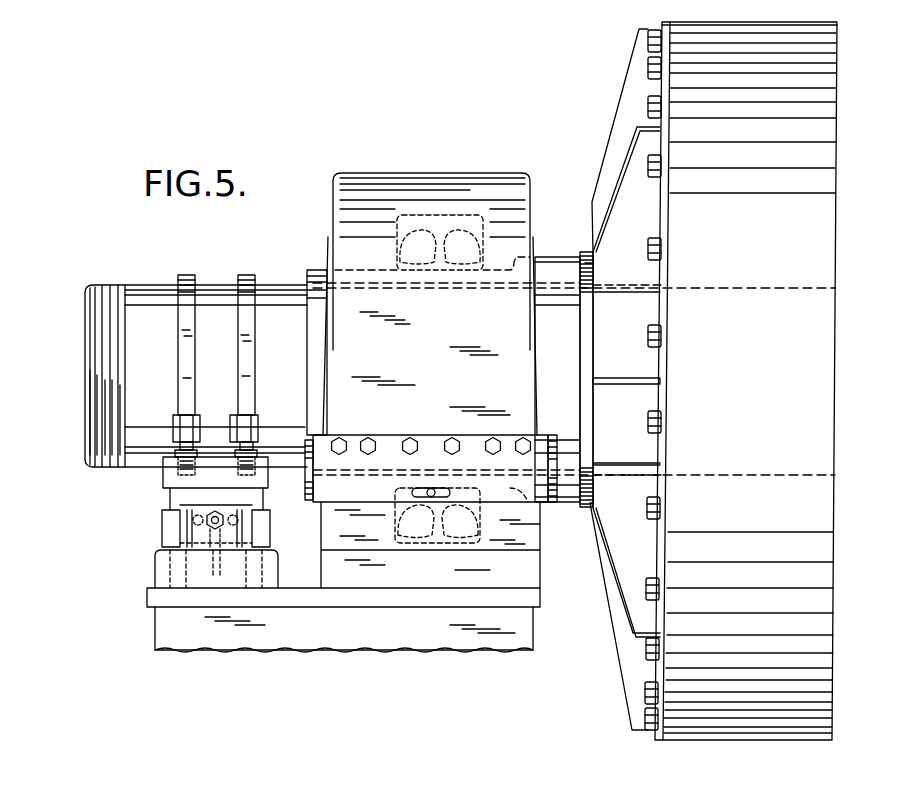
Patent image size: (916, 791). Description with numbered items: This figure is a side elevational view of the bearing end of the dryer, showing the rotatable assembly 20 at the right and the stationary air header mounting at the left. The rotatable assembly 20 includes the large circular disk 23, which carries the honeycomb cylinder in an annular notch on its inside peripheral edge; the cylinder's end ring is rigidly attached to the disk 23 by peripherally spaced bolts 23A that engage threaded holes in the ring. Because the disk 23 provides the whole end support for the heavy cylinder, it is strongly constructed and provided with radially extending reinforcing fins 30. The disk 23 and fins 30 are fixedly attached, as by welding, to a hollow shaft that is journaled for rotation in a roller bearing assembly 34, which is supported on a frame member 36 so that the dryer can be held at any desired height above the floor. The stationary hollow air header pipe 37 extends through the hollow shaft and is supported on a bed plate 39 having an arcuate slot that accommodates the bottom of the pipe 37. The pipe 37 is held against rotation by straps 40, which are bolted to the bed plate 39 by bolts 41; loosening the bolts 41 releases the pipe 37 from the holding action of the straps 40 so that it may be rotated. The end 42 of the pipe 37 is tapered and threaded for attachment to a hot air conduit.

The rotatable assembly 20 is at (838, 542).
The disk 23 is at (665, 450).
The bolts 23A is at (663, 508).
The reinforcing fins 30 is at (633, 181).
The roller bearing assembly 34 is at (409, 168).
The frame member 36 is at (380, 600).
The air header pipe 37 is at (283, 298).
The bed plate 39 is at (165, 479).
The straps 40 is at (185, 276).
The bolts 41 is at (173, 412).
The end of pipe 42 is at (88, 327).